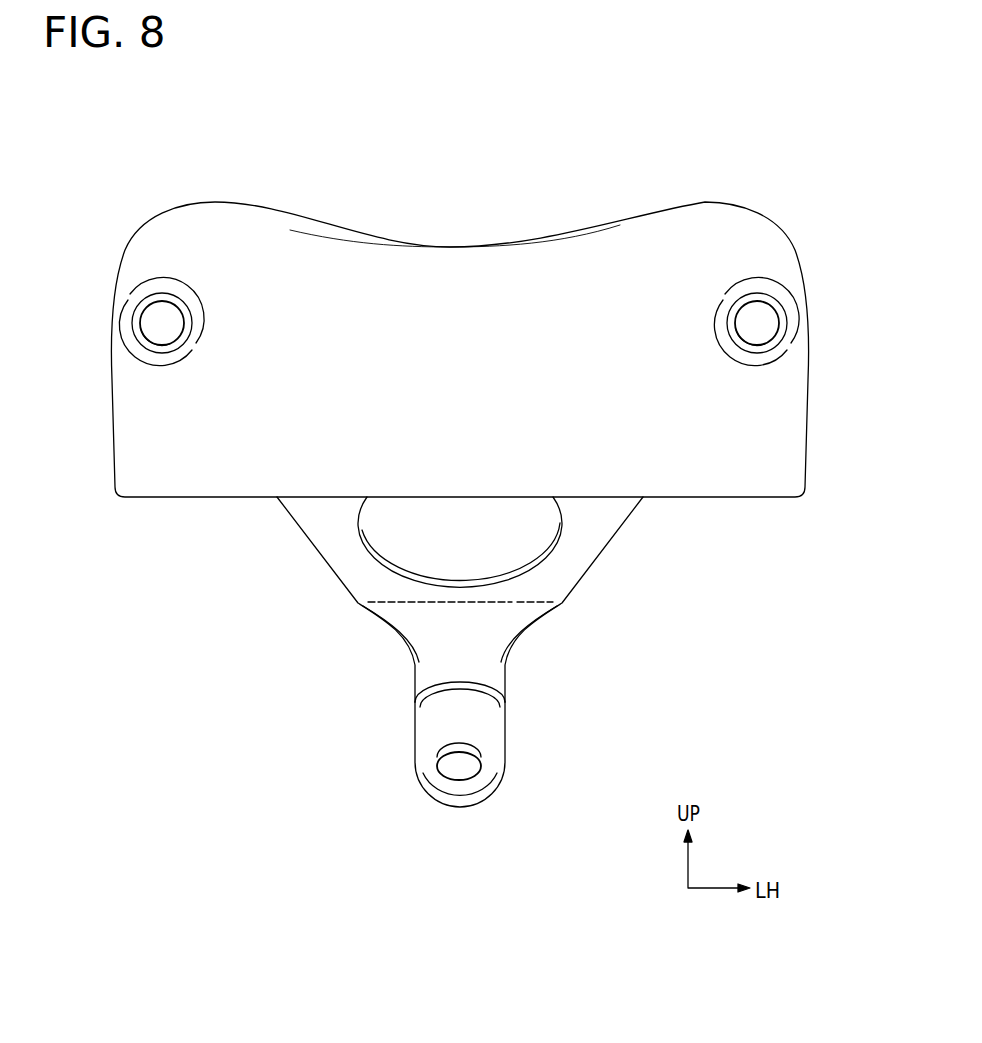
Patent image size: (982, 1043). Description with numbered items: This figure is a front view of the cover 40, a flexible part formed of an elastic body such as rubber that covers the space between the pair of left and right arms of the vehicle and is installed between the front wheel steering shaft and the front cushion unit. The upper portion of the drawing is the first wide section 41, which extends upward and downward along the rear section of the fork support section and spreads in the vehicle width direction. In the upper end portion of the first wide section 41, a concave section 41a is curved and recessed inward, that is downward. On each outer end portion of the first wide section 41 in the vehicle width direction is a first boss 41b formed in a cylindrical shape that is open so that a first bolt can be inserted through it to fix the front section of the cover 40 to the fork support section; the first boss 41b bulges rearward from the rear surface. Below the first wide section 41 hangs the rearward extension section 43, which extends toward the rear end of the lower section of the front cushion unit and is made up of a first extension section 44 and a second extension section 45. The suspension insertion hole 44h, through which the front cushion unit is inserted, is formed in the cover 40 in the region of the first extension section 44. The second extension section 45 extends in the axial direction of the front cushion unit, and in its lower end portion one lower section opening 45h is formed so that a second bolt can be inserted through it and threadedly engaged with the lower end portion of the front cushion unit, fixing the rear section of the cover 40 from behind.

The cover 40 is at (792, 120).
The first wide section 41 is at (787, 400).
The concave section 41a is at (447, 247).
The first boss 41b is at (163, 342).
The rearward extension section 43 is at (666, 618).
The first extension section 44 is at (562, 582).
The suspension insertion hole 44h is at (478, 523).
The second extension section 45 is at (490, 672).
The lower section opening 45h is at (460, 759).